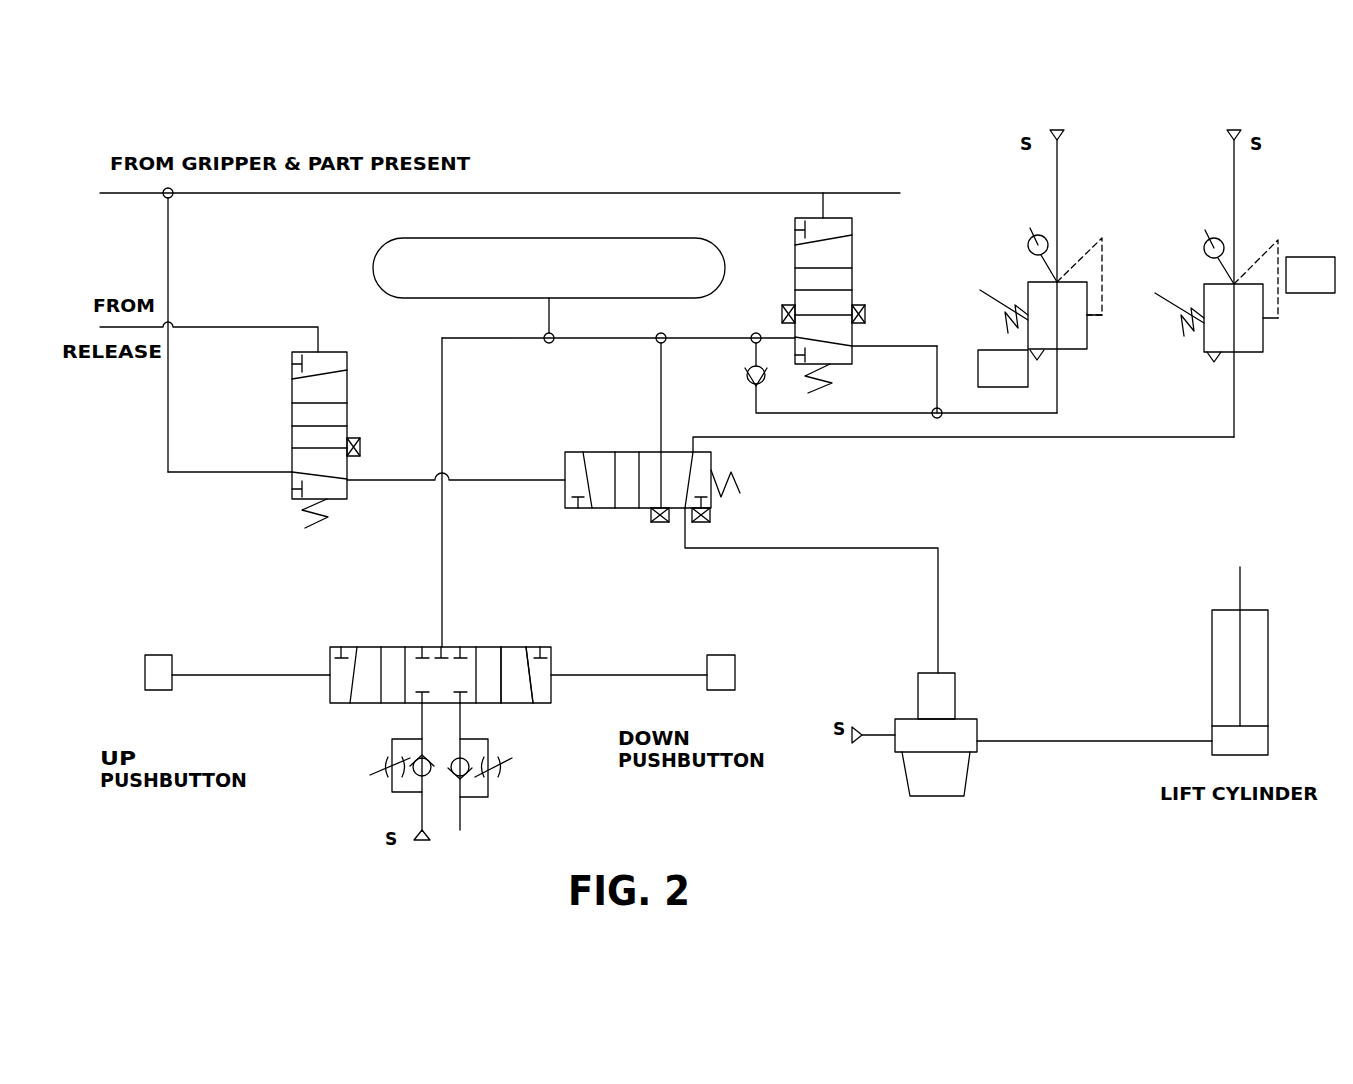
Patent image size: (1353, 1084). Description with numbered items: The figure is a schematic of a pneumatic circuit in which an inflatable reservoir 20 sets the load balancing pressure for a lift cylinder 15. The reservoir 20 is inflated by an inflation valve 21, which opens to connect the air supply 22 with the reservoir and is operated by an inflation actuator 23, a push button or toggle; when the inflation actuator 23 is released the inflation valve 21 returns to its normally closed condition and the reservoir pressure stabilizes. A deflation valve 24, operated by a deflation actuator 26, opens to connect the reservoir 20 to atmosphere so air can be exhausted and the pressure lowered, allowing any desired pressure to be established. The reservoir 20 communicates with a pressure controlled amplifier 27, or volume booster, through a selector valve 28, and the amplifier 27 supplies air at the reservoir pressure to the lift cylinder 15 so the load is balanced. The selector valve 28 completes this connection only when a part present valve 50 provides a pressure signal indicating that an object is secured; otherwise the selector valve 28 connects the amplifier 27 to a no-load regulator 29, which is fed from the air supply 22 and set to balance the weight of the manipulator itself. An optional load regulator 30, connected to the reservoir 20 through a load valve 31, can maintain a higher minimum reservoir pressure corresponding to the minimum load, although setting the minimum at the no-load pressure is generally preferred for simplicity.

The lift cylinder 15 is at (1268, 633).
The reservoir 20 is at (720, 248).
The inflation valve 21 is at (370, 647).
The air supply 22 is at (1062, 128).
The inflation actuator 23 is at (160, 690).
The deflation valve 24 is at (516, 647).
The deflation actuator 26 is at (735, 690).
The amplifier 27 is at (970, 773).
The selector valve 28 is at (647, 508).
The no-load regulator 29 is at (1248, 352).
The load regulator 30 is at (1075, 349).
The load valve 31 is at (852, 298).
The part present valve 50 is at (347, 432).